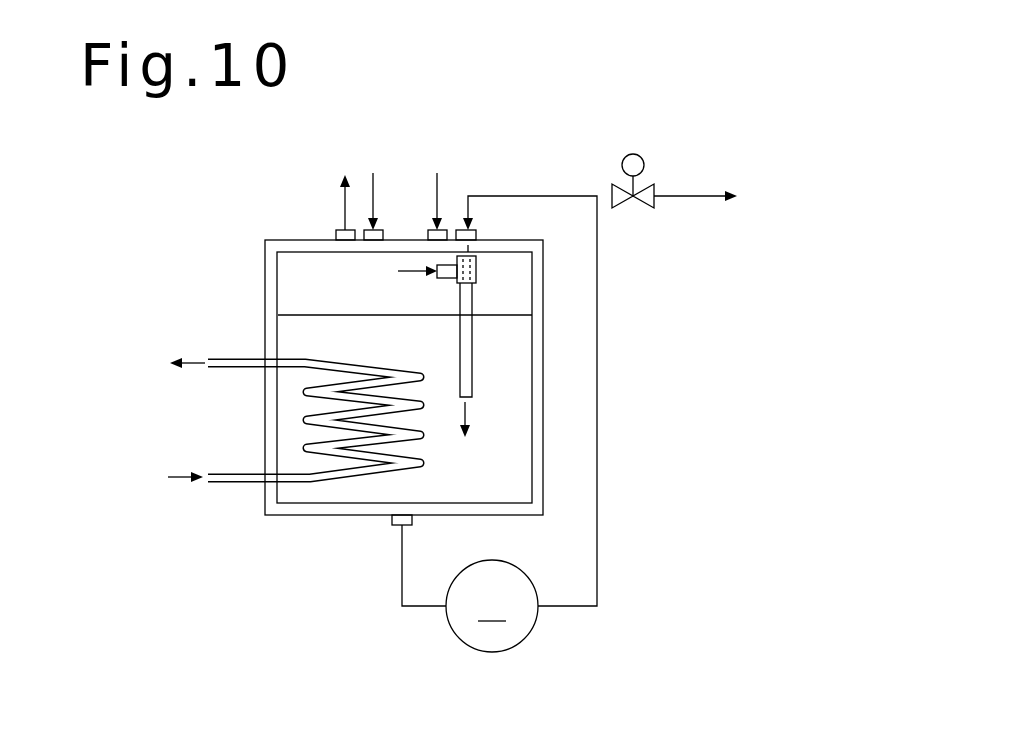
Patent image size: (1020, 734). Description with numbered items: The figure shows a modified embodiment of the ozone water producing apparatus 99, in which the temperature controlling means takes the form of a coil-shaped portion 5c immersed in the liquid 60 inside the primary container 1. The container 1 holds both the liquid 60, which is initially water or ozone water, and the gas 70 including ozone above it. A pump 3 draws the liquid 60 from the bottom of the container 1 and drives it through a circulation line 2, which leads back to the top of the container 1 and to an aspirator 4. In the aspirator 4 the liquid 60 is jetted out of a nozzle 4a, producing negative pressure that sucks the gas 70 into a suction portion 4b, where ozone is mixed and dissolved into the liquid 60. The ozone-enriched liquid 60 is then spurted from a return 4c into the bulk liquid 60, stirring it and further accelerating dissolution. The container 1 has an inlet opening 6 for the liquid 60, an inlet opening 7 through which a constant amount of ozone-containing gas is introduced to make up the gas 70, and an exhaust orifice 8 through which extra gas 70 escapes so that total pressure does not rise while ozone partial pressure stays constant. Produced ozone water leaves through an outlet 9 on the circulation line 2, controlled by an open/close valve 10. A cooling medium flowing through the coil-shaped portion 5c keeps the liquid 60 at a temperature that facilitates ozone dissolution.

The apparatus 99 is at (257, 232).
The primary container 1 is at (272, 428).
The circulation line 2 is at (598, 570).
The pump 3 is at (492, 606).
The aspirator 4 is at (478, 277).
The nozzle 4a is at (478, 256).
The suction portion 4b is at (452, 280).
The return 4c is at (459, 338).
The coil-shaped portion 5c is at (296, 481).
The inlet opening 6 is at (445, 228).
The inlet opening 7 is at (380, 228).
The exhaust orifice 8 is at (340, 228).
The outlet 9 is at (695, 195).
The open/close valve 10 is at (645, 190).
The liquid 60 is at (280, 497).
The gas 70 is at (278, 283).